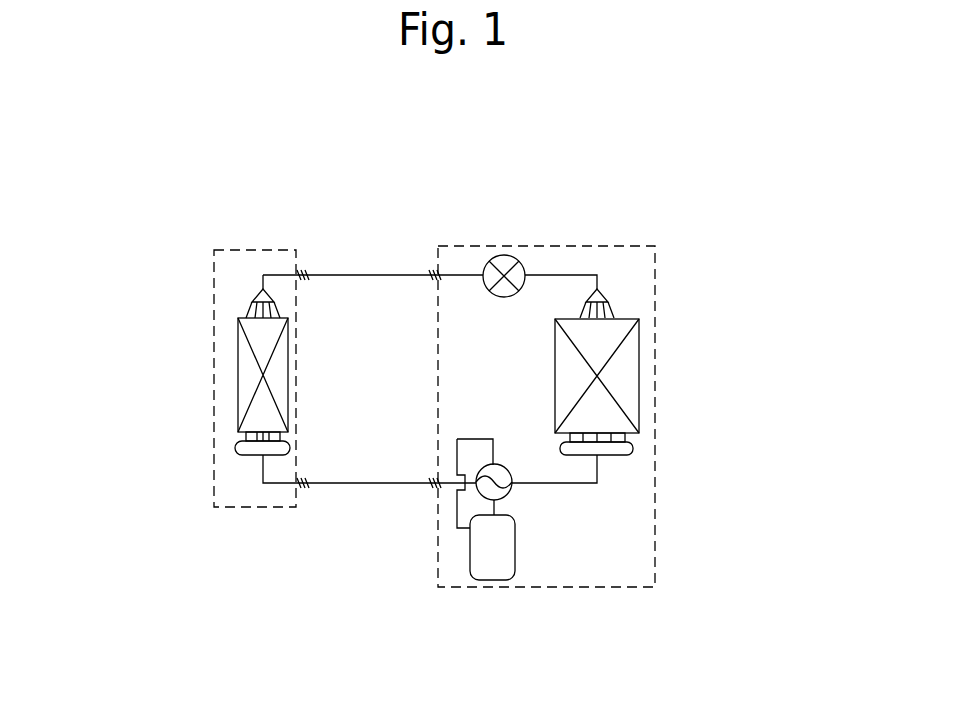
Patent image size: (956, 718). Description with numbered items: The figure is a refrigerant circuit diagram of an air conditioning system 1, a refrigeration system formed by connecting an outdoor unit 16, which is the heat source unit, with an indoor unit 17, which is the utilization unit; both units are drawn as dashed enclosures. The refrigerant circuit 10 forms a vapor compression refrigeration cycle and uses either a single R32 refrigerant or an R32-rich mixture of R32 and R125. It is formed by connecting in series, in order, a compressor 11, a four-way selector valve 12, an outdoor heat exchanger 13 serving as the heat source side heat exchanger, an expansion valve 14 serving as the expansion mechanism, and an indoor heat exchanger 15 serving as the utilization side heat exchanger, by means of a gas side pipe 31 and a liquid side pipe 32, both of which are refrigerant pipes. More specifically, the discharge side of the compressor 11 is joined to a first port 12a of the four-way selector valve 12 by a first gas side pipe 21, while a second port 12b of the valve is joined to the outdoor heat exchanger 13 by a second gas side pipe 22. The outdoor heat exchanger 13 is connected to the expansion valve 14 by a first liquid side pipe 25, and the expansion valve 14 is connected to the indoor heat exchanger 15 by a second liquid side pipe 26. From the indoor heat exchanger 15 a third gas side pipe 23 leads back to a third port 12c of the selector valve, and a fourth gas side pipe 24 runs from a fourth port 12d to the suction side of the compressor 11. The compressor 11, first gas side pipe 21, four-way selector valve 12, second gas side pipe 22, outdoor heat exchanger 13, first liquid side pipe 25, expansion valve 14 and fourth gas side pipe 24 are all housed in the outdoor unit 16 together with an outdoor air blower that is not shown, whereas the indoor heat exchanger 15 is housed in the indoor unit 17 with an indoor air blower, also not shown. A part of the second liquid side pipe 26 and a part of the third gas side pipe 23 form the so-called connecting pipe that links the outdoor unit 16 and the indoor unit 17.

The air conditioning system 1 is at (202, 116).
The refrigerant circuit 10 is at (392, 247).
The compressor 11 is at (515, 538).
The four-way selector valve 12 is at (508, 468).
The first port 12a is at (505, 488).
The second port 12b is at (507, 478).
The third port 12c is at (499, 463).
The fourth port 12d is at (481, 469).
The outdoor heat exchanger 13 is at (639, 362).
The expansion valve 14 is at (505, 255).
The indoor heat exchanger 15 is at (238, 367).
The outdoor unit 16 is at (627, 246).
The indoor unit 17 is at (214, 287).
The first gas side pipe 21 is at (503, 495).
The second gas side pipe 22 is at (592, 487).
The third gas side pipe 23 is at (397, 483).
The fourth gas side pipe 24 is at (453, 512).
The first liquid side pipe 25 is at (553, 275).
The second liquid side pipe 26 is at (415, 275).
The gas side pipe 31 is at (653, 645).
The liquid side pipe 32 is at (445, 143).